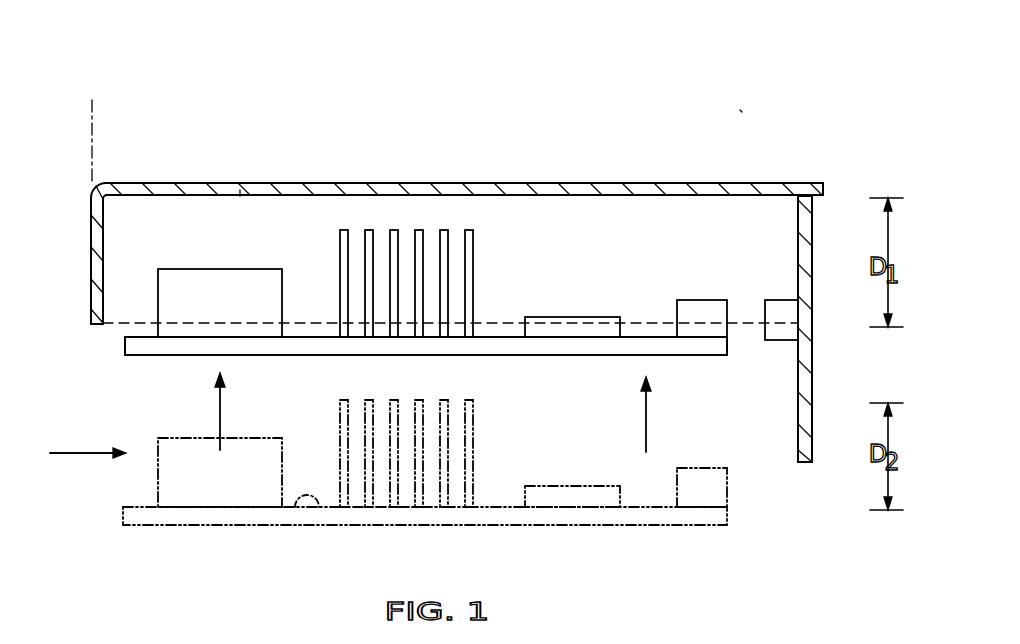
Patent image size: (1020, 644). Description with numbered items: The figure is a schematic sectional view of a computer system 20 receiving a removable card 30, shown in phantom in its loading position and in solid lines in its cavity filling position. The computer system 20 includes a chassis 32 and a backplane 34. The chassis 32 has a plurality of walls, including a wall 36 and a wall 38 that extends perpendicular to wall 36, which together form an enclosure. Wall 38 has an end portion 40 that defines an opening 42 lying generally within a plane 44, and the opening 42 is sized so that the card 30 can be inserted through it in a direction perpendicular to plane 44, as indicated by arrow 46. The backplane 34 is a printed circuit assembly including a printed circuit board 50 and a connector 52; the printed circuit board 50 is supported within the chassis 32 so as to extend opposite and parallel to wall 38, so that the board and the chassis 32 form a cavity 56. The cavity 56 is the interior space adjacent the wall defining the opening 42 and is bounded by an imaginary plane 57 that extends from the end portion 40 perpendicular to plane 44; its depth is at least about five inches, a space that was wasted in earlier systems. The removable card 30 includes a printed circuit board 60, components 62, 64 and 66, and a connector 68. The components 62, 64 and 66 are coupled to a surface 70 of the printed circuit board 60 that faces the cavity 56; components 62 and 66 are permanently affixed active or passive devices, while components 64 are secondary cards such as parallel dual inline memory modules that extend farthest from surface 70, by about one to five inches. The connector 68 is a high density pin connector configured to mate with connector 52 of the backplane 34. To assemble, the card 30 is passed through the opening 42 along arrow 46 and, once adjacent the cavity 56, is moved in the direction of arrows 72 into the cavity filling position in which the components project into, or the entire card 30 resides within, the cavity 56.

The computer system 20 is at (742, 106).
The removable card 30 is at (425, 541).
The chassis 32 is at (478, 183).
The backplane 34 is at (817, 262).
The wall 36 is at (326, 183).
The wall 38 is at (91, 265).
The end portion 40 is at (91, 320).
The opening 42 is at (97, 328).
The plane 44 is at (100, 110).
The arrow 46 is at (80, 453).
The printed circuit board 50 is at (812, 380).
The connector 52 is at (782, 342).
The cavity 56 is at (243, 208).
The imaginary plane 57 is at (490, 322).
The printed circuit board 60 is at (548, 527).
The component 62 is at (222, 278).
The components 64 is at (342, 275).
The component 66 is at (572, 317).
The connector 68 is at (700, 300).
The surface 70 is at (316, 512).
The arrows 72 is at (218, 415).